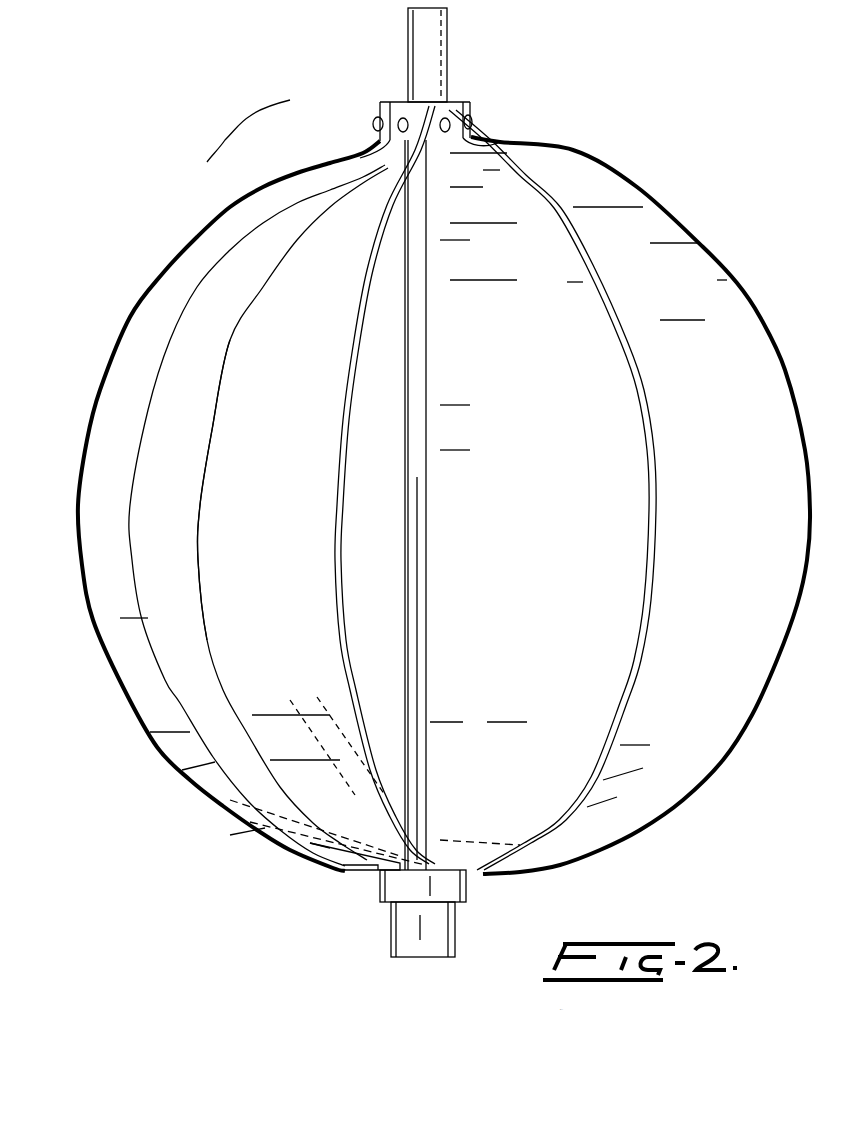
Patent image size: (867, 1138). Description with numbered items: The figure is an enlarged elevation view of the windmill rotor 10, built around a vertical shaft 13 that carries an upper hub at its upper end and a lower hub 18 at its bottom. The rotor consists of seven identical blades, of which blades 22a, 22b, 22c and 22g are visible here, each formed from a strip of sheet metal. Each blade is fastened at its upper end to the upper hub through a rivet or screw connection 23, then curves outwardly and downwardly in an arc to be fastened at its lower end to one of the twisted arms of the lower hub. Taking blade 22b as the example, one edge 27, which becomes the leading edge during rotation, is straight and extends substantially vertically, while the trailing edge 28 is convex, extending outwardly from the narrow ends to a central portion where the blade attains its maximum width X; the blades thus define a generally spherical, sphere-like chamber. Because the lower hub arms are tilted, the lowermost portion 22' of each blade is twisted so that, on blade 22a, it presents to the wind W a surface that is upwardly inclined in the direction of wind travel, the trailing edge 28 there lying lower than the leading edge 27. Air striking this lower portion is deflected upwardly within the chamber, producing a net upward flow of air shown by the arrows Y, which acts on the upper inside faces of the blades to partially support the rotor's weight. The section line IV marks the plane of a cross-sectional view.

The wind turbine rotor 10 is at (248, 126).
The shaft 13 is at (436, 50).
The lower shaft 18 is at (440, 931).
The rivet or screw connection 23 is at (370, 124).
The blade 22a is at (341, 190).
The blade 22b is at (510, 200).
The blade 22c is at (618, 193).
The blade 22g is at (215, 231).
The lowermost portion of blade 22' is at (375, 803).
The leading edge 27 is at (203, 558).
The trailing edge 28 is at (342, 508).
The maximum width X is at (652, 510).
The wind W is at (447, 318).
The arrows Y is at (310, 678).
The section line IV- IV is at (157, 505).